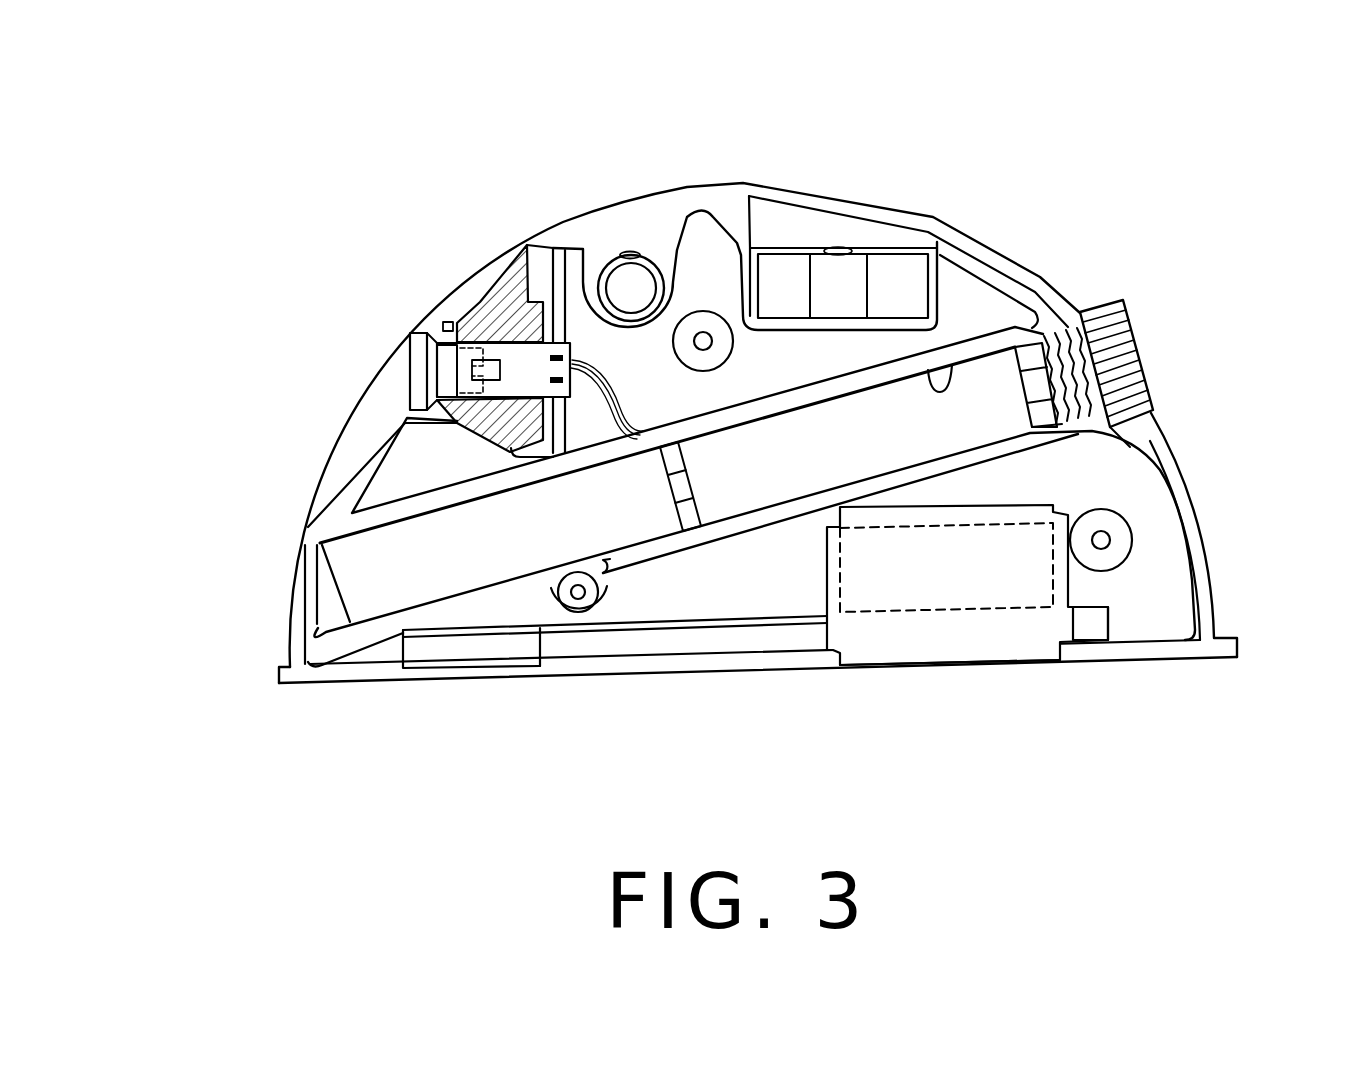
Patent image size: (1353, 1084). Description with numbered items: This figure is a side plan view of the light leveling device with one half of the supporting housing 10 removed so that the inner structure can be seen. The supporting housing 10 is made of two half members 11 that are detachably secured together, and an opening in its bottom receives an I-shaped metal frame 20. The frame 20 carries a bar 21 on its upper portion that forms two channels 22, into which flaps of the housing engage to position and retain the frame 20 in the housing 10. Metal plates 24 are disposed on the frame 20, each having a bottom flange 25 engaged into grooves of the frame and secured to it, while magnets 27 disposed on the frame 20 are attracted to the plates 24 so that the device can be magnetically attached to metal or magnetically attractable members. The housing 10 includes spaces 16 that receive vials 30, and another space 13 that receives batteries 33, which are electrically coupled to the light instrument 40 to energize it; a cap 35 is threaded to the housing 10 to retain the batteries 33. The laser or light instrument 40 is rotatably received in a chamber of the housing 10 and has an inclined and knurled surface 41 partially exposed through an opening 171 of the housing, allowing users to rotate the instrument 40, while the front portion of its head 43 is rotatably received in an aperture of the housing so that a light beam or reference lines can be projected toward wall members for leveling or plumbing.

The supporting housing 10 is at (350, 320).
The half members 11 is at (302, 553).
The space 13 is at (940, 385).
The spaces 16 is at (633, 256).
The I-shaped metal frame 20 is at (680, 660).
The bar 21 is at (540, 640).
The channels 22 is at (460, 657).
The metal plates 24 is at (1030, 640).
The bottom flange 25 is at (917, 668).
The magnets 27 is at (950, 575).
The vials 30 is at (612, 258).
The batteries 33 is at (365, 598).
The cap 35 is at (1130, 352).
The light instrument 40 is at (530, 343).
The inclined and knurled surface 41 is at (476, 302).
The head 43 is at (415, 378).
The opening 171 is at (458, 297).